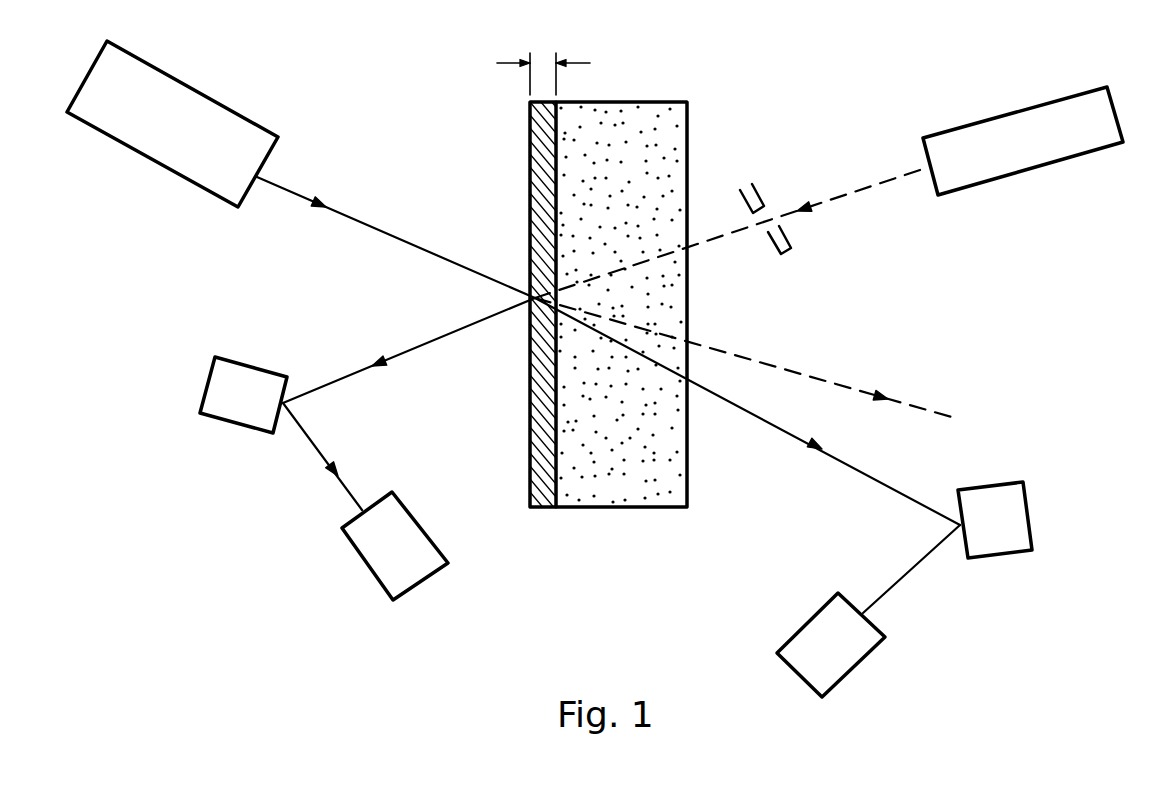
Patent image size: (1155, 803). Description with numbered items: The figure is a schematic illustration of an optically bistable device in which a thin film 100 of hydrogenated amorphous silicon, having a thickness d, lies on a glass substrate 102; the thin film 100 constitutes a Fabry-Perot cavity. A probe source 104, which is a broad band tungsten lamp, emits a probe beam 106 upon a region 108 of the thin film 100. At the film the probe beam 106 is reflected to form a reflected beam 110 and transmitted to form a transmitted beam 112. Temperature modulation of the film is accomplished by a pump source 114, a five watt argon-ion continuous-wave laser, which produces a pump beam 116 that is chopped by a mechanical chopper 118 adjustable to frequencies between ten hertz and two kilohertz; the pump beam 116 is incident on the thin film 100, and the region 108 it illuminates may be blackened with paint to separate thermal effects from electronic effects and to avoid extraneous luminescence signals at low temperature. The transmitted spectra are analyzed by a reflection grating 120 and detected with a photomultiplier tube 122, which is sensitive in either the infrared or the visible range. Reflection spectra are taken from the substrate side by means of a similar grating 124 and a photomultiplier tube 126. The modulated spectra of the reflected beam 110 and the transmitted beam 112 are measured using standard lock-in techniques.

The thin film 100 is at (541, 477).
The glass substrate 102 is at (631, 478).
The probe source 104 is at (185, 97).
The probe beam 106 is at (363, 218).
The region 108 is at (530, 248).
The reflected beam 110 is at (422, 345).
The transmitted beam 112 is at (750, 405).
The pump source 114 is at (1030, 108).
The pump beam 116 is at (845, 195).
The mechanical chopper 118 is at (742, 190).
The reflection grating 120 is at (1030, 502).
The photomultiplier tube 122 is at (870, 653).
The grating 124 is at (258, 368).
The photomultiplier tube 126 is at (352, 553).
The thickness d is at (543, 73).